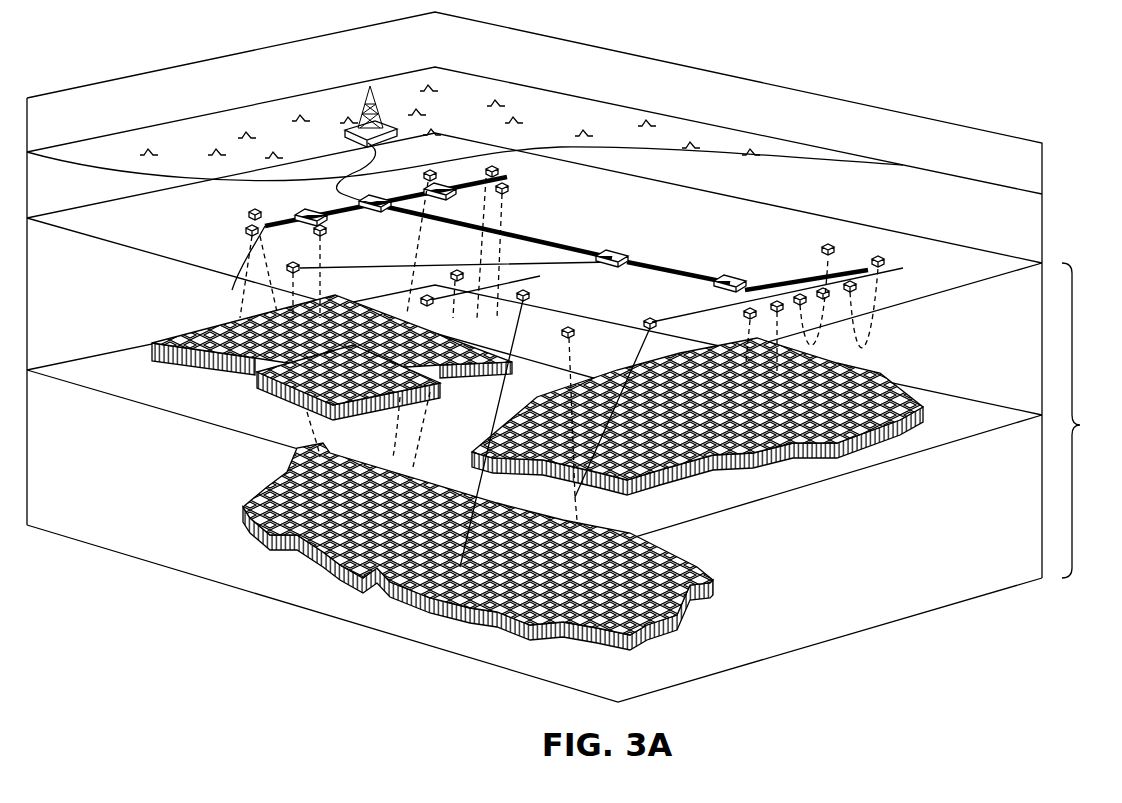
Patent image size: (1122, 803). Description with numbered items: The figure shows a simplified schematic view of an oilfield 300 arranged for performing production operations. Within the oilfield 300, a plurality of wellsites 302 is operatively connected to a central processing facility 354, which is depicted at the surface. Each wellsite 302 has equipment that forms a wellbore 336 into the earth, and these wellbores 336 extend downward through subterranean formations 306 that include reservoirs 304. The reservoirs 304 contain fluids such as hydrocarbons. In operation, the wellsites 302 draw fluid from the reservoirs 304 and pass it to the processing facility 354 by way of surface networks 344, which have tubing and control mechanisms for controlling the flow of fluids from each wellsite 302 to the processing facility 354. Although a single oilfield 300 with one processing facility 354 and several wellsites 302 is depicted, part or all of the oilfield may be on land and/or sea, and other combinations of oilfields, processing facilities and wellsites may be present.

The oilfield 300 is at (89, 62).
The wellsite 302 is at (668, 300).
The reservoir 304 is at (822, 484).
The subterranean formation 306 is at (1088, 420).
The wellbore 336 is at (893, 326).
The surface network 344 is at (290, 226).
The central processing facility 354 is at (354, 100).